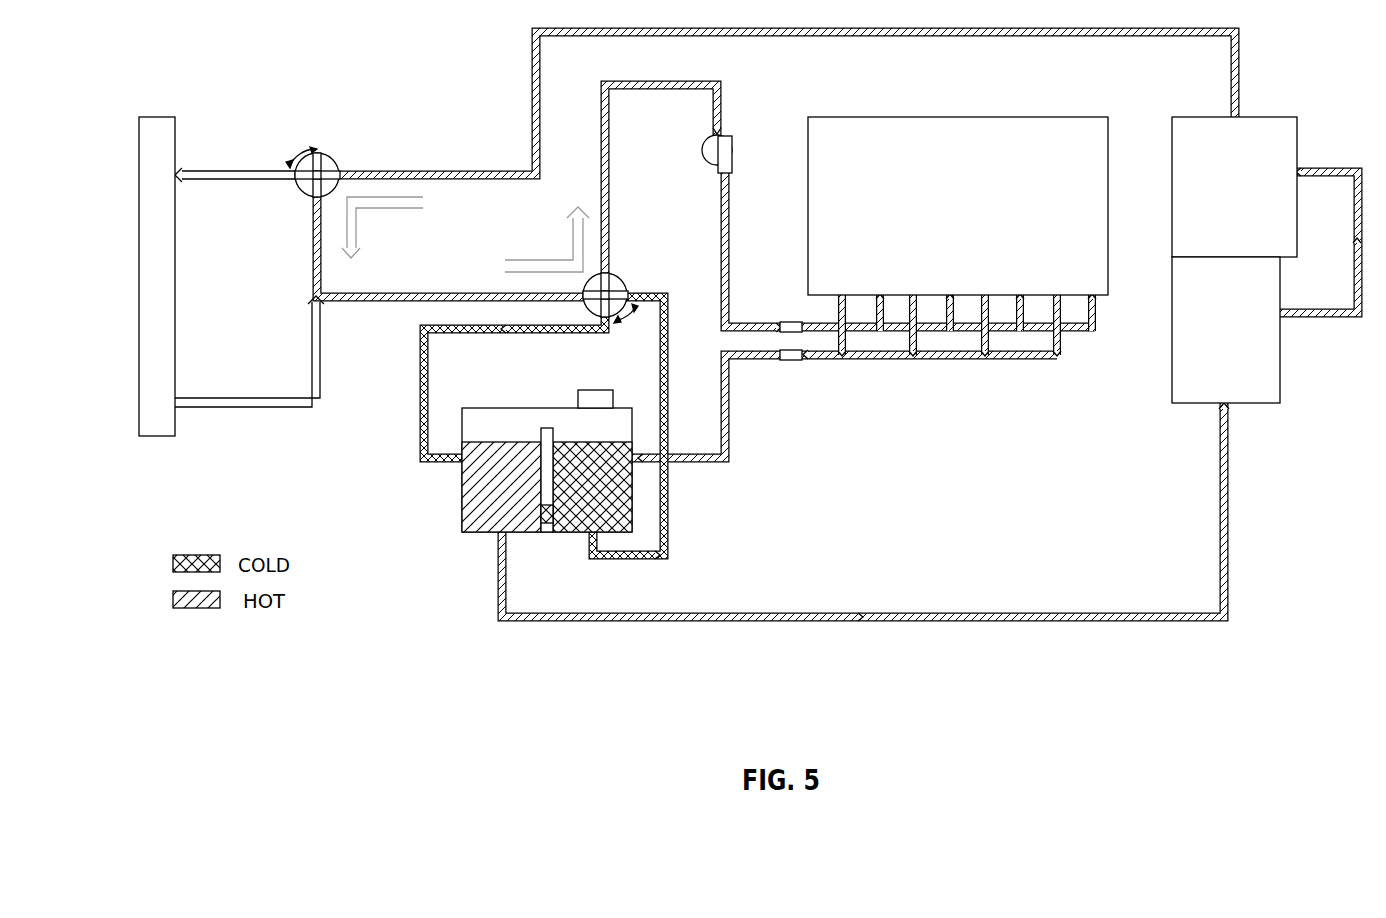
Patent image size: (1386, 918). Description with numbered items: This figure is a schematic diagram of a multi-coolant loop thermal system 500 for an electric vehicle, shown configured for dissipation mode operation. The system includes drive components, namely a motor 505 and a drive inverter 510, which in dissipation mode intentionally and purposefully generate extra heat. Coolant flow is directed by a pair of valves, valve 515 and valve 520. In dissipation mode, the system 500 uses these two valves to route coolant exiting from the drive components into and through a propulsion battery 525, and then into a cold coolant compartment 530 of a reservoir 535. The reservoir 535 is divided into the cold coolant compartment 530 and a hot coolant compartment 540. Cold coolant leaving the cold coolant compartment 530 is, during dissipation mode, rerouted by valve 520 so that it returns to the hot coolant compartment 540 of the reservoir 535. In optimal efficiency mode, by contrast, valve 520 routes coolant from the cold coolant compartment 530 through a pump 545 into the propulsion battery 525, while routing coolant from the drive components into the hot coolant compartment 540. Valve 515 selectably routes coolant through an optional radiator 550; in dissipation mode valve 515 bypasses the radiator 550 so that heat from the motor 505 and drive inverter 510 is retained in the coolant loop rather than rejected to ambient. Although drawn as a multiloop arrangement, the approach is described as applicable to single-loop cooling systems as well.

The multi-coolant loop thermal system 500 is at (316, 44).
The motor 505 is at (1280, 355).
The drive inverter 510 is at (1280, 115).
The valve 515 is at (330, 153).
The valve 520 is at (622, 278).
The propulsion battery 525 is at (1030, 115).
The cold coolant compartment 530 is at (573, 438).
The reservoir 535 is at (523, 469).
The hot coolant compartment 540 is at (527, 438).
The pump 545 is at (727, 142).
The radiator 550 is at (175, 265).